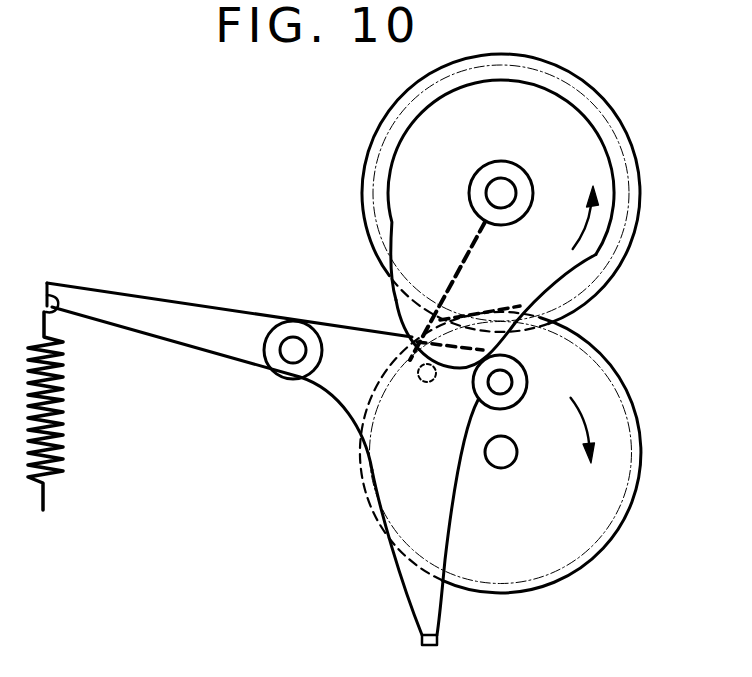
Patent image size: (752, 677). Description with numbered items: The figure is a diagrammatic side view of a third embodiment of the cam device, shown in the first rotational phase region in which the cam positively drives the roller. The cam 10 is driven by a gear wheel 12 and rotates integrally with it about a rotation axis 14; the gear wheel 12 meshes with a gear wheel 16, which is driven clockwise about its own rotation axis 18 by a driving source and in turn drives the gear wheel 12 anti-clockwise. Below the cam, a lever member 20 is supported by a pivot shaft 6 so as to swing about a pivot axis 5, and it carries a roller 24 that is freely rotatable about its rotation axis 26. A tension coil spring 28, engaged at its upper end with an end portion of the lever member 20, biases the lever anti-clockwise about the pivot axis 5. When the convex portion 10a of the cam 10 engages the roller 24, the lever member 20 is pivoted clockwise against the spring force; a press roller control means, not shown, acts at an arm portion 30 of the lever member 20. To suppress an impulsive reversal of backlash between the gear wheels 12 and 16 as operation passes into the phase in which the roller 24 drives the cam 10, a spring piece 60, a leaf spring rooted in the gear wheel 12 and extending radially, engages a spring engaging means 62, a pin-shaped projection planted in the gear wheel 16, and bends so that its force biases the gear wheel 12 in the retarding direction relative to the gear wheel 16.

The gear wheel 12 is at (640, 173).
The rotation axis 14 is at (502, 193).
The cam 10 is at (396, 238).
The convex portion 10a is at (393, 302).
The spring piece 60 is at (462, 252).
The spring engaging means 62 is at (420, 380).
The lever member 20 is at (186, 308).
The arm portion 30 is at (400, 580).
The tension coil spring 28 is at (60, 386).
The pivot axis 5 is at (294, 350).
The pivot shaft 6 is at (292, 362).
The gear wheel 16 is at (642, 398).
The rotation axis 18 is at (503, 455).
The roller 24 is at (527, 385).
The rotation axis 26 is at (500, 382).